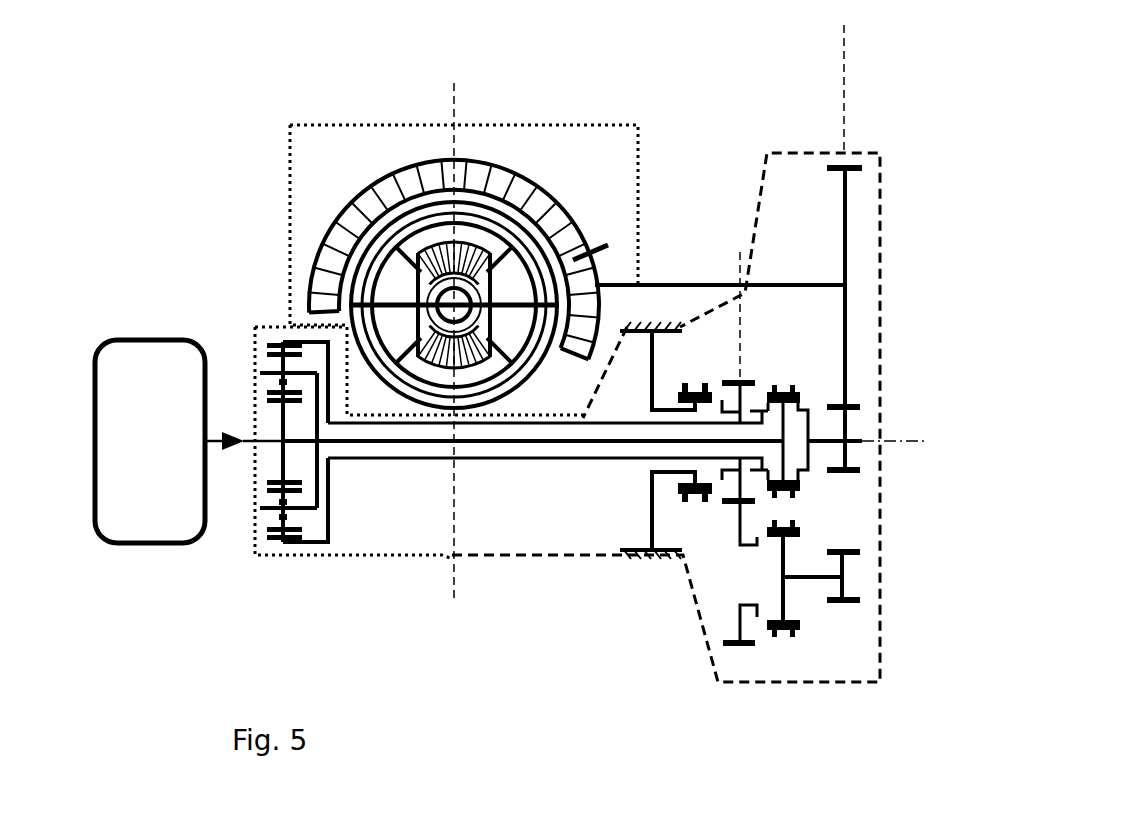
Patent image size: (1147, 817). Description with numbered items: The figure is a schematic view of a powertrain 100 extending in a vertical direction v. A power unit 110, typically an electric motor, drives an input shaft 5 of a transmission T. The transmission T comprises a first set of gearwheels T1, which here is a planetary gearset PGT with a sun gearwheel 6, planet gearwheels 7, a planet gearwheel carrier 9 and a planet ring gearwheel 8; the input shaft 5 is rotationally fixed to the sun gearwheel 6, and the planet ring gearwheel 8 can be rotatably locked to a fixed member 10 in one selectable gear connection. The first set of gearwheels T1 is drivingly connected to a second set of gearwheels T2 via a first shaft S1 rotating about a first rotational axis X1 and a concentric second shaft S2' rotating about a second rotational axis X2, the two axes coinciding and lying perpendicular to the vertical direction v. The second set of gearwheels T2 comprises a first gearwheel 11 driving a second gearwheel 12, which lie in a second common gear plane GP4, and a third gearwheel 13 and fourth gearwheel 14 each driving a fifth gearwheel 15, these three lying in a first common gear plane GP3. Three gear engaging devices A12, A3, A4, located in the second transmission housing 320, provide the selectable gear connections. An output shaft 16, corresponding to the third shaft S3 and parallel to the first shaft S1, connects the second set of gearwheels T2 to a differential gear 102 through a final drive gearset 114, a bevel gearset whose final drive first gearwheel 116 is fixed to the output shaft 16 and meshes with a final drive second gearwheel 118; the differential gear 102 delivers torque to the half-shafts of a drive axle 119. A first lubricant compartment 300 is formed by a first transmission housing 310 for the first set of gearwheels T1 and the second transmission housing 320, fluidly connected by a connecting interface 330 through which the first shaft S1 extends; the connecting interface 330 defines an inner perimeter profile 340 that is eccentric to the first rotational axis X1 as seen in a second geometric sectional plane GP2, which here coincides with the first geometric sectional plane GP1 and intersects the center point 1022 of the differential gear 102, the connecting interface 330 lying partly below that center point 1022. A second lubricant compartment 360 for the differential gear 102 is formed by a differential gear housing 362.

The powertrain 100 is at (183, 123).
The center point of the differential gear 1022 is at (420, 305).
The second lubricant compartment 360 is at (391, 270).
The differential gear housing 362 is at (290, 190).
The first lubricant compartment 300 is at (255, 352).
The first transmission housing 310 is at (352, 442).
The second transmission housing 320 is at (666, 417).
The planet gearwheel carrier 9 is at (257, 373).
The power unit 110 is at (150, 441).
The input shaft 5 is at (243, 443).
The sun gearwheel 6 is at (281, 462).
The planet gearwheels 7 is at (282, 517).
The planet ring gearwheel 8 is at (298, 547).
The planetary gearset PGT is at (275, 583).
The connecting interface 330 is at (440, 570).
The inner perimeter profile 340 is at (468, 536).
The first geometric sectional plane GP1 is at (416, 328).
The second geometric sectional plane GP2 is at (453, 83).
The first common gear plane GP3 is at (852, 76).
The second common gear plane GP4 is at (722, 304).
The drive axle 119 is at (490, 297).
The final drive second gearwheel 118 is at (525, 292).
The differential gear 102 is at (568, 180).
The final drive first gearwheel 116 is at (612, 240).
The final drive gearset 114 is at (620, 225).
The third shaft S3 is at (680, 283).
The output shaft 16 is at (790, 285).
The first gearwheel 11 is at (745, 380).
The third gearwheel 13 is at (842, 383).
The gear engaging device A12 is at (778, 390).
The gear engaging device A3 is at (783, 632).
The gear engaging device A4 is at (697, 497).
The fifth gearwheel 15 is at (860, 408).
The fourth gearwheel 14 is at (852, 600).
The second gearwheel 12 is at (735, 647).
The fixed member 10 is at (648, 557).
The first shaft S1 is at (510, 445).
The second shaft S2' is at (548, 510).
The transmission T is at (864, 192).
The first set of gearwheels T1 is at (262, 330).
The second set of gearwheels T2 is at (853, 146).
The first rotational axis X1 is at (919, 422).
The second rotational axis X2 is at (919, 422).
The vertical direction v is at (940, 500).